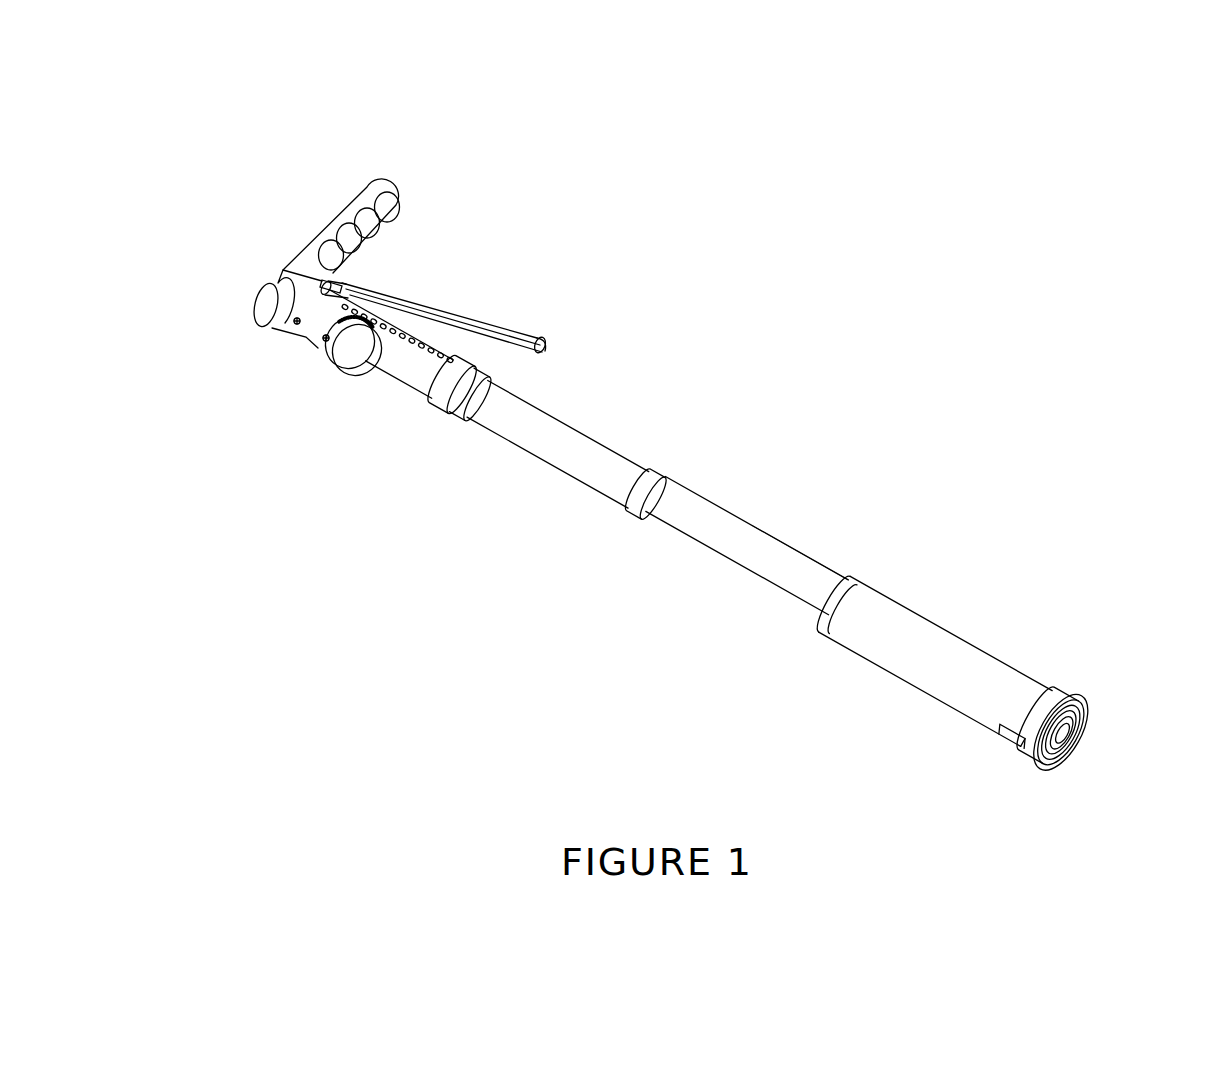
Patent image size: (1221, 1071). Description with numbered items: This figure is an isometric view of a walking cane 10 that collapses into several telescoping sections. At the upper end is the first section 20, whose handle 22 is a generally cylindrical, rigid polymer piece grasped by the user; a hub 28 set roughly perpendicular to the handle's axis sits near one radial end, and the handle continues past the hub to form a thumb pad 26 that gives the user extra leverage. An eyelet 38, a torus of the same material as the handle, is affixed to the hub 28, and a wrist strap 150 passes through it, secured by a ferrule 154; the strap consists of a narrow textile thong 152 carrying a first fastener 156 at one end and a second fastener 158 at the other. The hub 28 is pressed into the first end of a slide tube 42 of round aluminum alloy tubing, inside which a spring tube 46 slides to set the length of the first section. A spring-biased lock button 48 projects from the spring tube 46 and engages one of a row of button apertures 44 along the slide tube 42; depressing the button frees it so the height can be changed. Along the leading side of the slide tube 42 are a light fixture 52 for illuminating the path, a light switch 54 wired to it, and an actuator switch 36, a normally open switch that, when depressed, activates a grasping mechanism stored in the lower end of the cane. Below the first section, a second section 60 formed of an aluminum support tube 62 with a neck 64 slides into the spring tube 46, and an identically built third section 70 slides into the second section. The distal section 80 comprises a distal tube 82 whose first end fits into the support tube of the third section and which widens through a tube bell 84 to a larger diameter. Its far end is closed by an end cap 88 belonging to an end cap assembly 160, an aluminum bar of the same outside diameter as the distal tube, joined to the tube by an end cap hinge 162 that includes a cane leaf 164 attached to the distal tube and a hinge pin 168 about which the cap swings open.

The walking cane 10 is at (686, 440).
The first section 20 is at (353, 256).
The handle 22 is at (366, 190).
The thumb pad 26 is at (254, 308).
The hub 28 is at (290, 282).
The actuator switch 36 is at (294, 324).
The eyelet 38 is at (342, 284).
The slide tube 42 is at (412, 378).
The button apertures 44 is at (411, 343).
The spring tube 46 is at (451, 405).
The lock button 48 is at (343, 308).
The light fixture 52 is at (351, 373).
The light switch 54 is at (325, 341).
The second section 60 is at (577, 476).
The support tube 62 is at (553, 428).
The neck 64 is at (464, 408).
The third section 70 is at (729, 594).
The distal section 80 is at (914, 625).
The distal tube 82 is at (925, 620).
The tube bell 84 is at (828, 630).
The end cap 88 is at (1092, 722).
The wrist strap 150 is at (480, 274).
The thong 152 is at (458, 327).
The ferrule 154 is at (356, 289).
The first fastener 156 is at (549, 343).
The second fastener 158 is at (553, 349).
The end cap assembly 160 is at (1047, 703).
The end cap hinge 162 is at (975, 768).
The cane leaf 164 is at (1002, 729).
The hinge pin 168 is at (1020, 748).